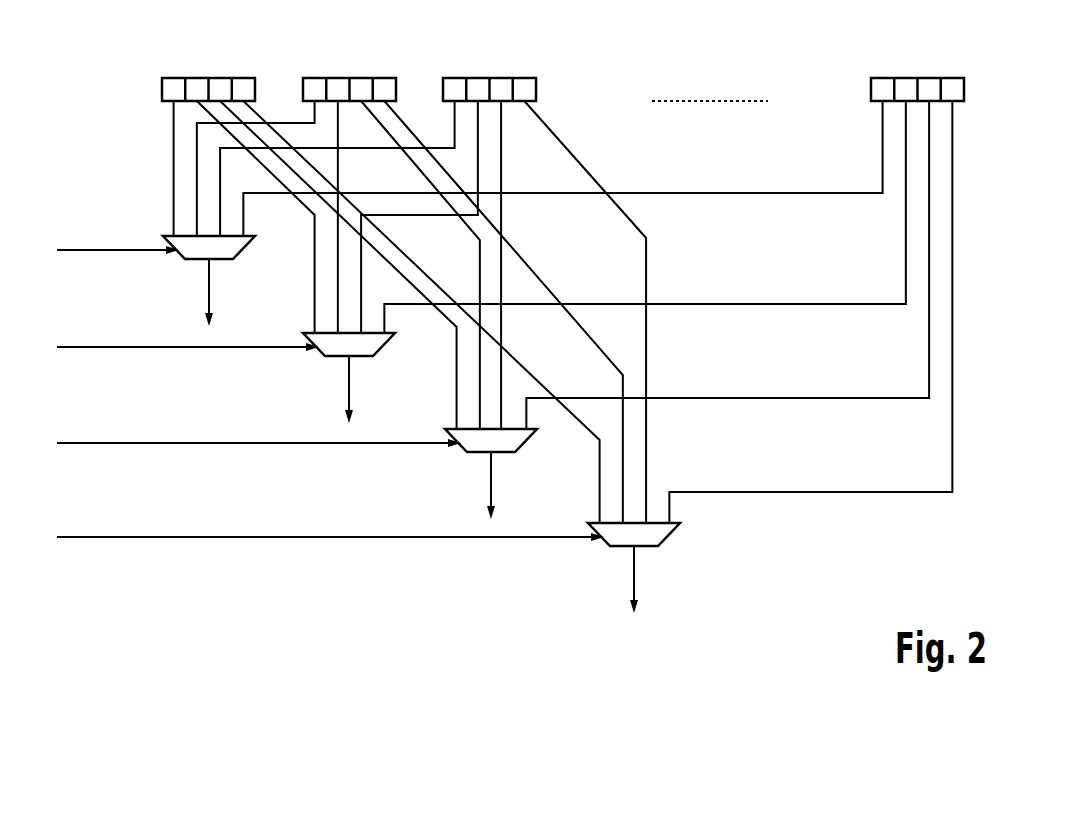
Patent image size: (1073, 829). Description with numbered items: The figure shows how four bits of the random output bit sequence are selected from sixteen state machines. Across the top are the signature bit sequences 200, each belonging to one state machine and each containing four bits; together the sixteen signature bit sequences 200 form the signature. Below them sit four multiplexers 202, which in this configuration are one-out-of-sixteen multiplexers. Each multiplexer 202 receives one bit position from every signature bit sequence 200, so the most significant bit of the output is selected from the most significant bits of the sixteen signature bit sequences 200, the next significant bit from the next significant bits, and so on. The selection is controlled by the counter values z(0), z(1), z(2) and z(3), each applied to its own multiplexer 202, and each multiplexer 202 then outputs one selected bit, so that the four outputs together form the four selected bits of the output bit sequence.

The signature bit sequence 200 is at (205, 77).
The multiplexer 202 is at (233, 247).
The input z(0) and output b0 of multiplexer 0 is at (135, 273).
The input z(1) and output b1 of multiplexer 1 is at (205, 370).
The input z(2) and output b2 of multiplexer 2 is at (276, 466).
The input z(3) and output b3 of multiplexer 3 is at (347, 560).